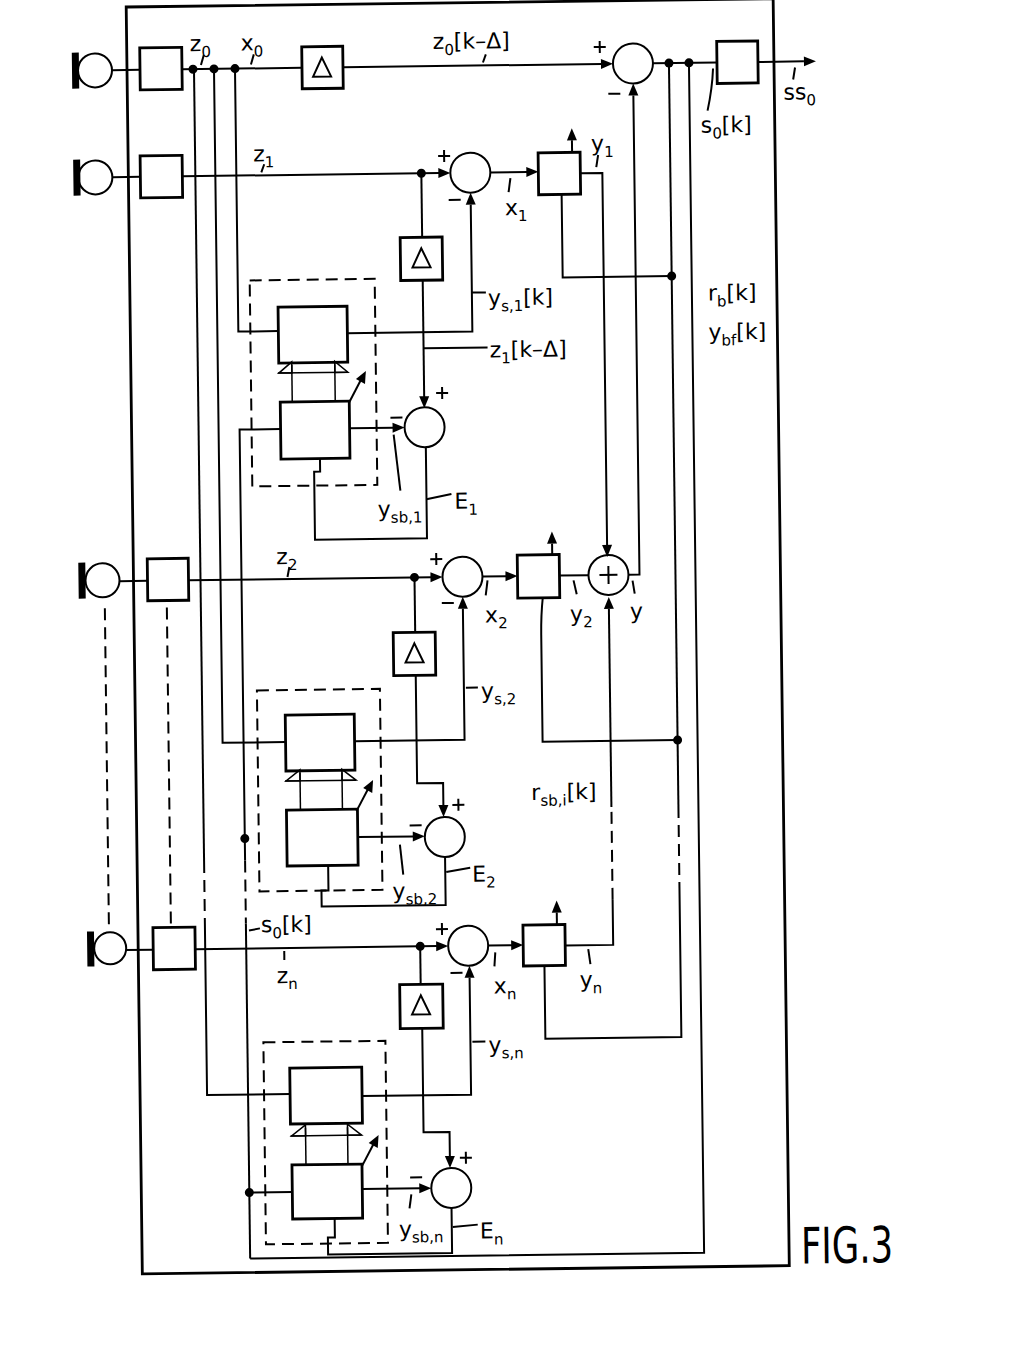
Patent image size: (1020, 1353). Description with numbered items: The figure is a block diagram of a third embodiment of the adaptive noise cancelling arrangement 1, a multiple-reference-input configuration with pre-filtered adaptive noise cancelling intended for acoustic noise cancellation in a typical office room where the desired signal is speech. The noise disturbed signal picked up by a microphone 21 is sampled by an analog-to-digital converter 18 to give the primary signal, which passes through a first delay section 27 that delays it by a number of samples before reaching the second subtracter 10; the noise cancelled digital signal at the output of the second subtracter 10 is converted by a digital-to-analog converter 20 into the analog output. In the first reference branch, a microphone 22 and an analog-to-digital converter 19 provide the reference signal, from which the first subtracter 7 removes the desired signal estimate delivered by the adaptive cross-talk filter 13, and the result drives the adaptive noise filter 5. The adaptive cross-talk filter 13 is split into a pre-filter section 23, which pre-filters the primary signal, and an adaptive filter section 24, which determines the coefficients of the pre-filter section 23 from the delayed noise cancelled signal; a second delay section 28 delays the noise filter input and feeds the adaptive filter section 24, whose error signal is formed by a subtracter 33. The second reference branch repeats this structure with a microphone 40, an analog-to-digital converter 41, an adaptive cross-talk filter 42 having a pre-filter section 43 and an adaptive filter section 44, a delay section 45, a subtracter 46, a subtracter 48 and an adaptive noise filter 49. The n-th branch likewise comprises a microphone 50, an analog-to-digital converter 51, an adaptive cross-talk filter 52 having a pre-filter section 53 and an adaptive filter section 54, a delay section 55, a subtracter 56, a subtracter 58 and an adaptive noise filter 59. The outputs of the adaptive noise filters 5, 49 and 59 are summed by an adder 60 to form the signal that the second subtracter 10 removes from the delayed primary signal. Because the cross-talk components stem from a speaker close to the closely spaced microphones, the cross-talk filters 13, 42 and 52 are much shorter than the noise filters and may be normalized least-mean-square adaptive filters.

The adaptive noise cancelling arrangement 1 is at (770, 218).
The adaptive noise filter 5 is at (552, 157).
The first subtracter 7 is at (478, 157).
The second subtracter 10 is at (628, 50).
The adaptive cross-talk filter 13 is at (316, 282).
The analog-to-digital converter 18 is at (160, 86).
The analog-to-digital converter 19 is at (160, 194).
The digital-to-analog converter 20 is at (736, 48).
The microphone 21 is at (85, 52).
The microphone 22 is at (85, 160).
The pre-filter section 23 is at (283, 306).
The adaptive filter section 24 is at (291, 463).
The first delay section 27 is at (327, 94).
The second delay section 28 is at (398, 252).
The subtracter 33 is at (440, 431).
The microphone 40 is at (90, 562).
The analog-to-digital converter 41 is at (157, 559).
The adaptive cross-talk filter 42 is at (320, 692).
The pre-filter section 43 is at (285, 716).
The adaptive filter section 44 is at (333, 868).
The delay section 45 is at (386, 642).
The subtracter 46 is at (463, 563).
The subtracter 48 is at (455, 841).
The adaptive noise filter 49 is at (526, 553).
The microphone 50 is at (96, 965).
The analog-to-digital converter 51 is at (163, 970).
The adaptive cross-talk filter 52 is at (251, 1072).
The pre-filter section 53 is at (284, 1069).
The adaptive filter section 54 is at (278, 1217).
The delay section 55 is at (388, 996).
The subtracter 56 is at (467, 932).
The subtracter 58 is at (457, 1192).
The adaptive noise filter 59 is at (527, 928).
The adder 60 is at (596, 556).